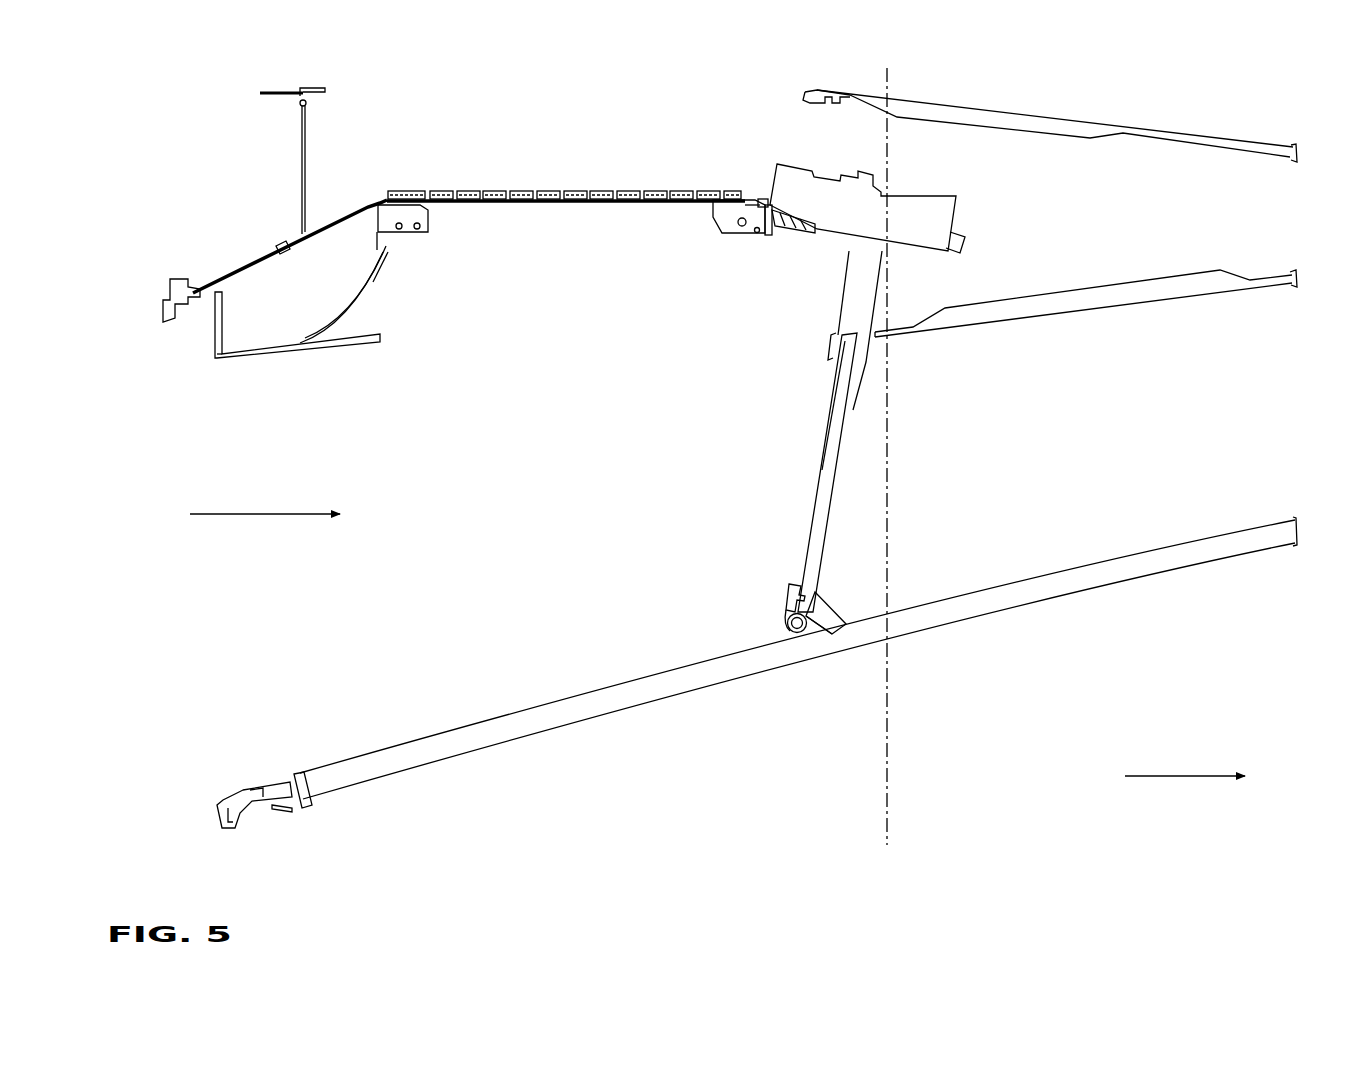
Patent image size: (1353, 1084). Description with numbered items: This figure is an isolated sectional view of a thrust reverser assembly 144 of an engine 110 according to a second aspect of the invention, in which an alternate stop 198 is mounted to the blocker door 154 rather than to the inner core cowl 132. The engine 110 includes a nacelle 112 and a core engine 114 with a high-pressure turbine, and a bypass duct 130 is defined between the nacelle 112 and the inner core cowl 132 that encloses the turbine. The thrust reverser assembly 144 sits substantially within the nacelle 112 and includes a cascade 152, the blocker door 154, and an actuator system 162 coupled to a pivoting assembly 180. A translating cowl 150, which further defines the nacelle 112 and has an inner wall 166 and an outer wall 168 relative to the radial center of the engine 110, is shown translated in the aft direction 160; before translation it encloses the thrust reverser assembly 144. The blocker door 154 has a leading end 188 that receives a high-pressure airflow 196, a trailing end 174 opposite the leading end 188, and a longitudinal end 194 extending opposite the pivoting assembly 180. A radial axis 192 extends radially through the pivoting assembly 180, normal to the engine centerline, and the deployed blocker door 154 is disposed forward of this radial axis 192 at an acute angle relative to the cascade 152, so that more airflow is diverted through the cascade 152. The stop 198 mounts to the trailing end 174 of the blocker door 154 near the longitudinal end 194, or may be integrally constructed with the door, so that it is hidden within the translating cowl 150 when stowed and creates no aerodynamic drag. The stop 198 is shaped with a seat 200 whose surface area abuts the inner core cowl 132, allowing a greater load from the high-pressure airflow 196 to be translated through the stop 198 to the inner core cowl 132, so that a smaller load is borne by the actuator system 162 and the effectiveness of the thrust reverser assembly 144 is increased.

The engine 110 is at (190, 155).
The nacelle 112 is at (1050, 218).
The core engine 114 is at (490, 718).
The bypass duct 130 is at (586, 451).
The inner core cowl 132 is at (596, 695).
The thrust reverser assembly 144 is at (859, 166).
The translating cowl 150 is at (1050, 111).
The cascade 152 is at (475, 190).
The blocker door 154 is at (822, 478).
The aft direction 160 is at (1185, 778).
The actuator system 162 is at (970, 205).
The inner wall 166 is at (1072, 300).
The outer wall 168 is at (1010, 110).
The trailing end 174 is at (850, 447).
The pivoting assembly 180 is at (900, 182).
The leading end 188 is at (808, 545).
The radial axis 192 is at (892, 78).
The longitudinal end 194 is at (797, 634).
The high-pressure airflow 196 is at (242, 506).
The stop 198 is at (826, 613).
The seat 200 is at (838, 630).